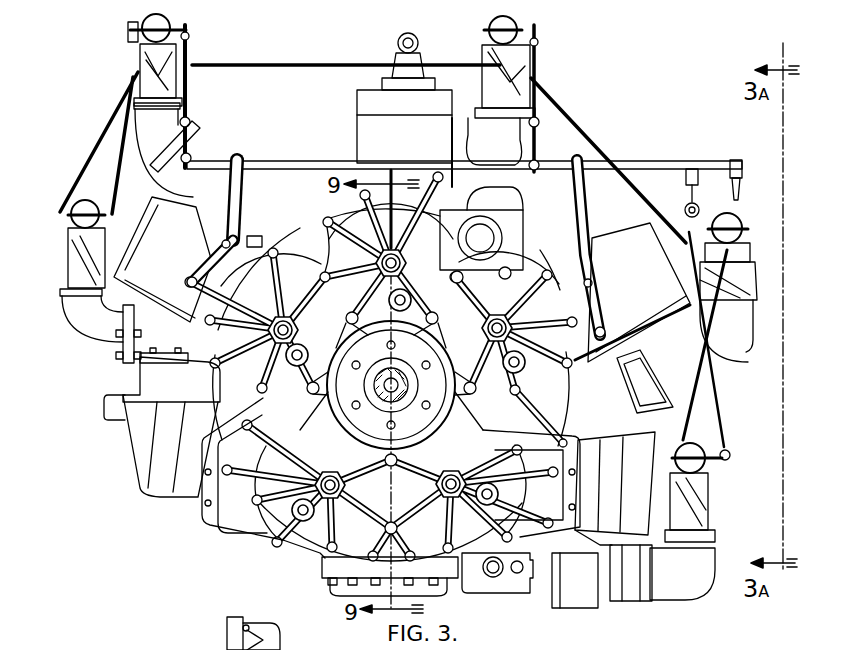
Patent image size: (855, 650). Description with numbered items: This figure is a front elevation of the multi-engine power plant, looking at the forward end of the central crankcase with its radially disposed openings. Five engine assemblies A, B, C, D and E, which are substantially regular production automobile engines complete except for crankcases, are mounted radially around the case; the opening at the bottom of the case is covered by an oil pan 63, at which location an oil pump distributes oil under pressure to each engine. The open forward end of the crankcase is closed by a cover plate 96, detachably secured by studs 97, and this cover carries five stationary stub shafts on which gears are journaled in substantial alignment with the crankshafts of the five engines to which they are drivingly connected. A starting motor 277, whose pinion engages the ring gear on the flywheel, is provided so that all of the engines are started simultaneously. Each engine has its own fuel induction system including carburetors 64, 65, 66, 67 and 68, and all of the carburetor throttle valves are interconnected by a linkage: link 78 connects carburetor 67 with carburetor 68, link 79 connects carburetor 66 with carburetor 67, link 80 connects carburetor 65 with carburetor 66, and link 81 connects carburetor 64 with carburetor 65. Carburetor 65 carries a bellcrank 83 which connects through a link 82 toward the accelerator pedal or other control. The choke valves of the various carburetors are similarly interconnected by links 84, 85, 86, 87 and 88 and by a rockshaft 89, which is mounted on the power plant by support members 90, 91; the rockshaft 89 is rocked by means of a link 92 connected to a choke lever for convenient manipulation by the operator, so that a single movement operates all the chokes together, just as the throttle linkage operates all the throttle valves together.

The oil pan 63 is at (340, 593).
The carburetor 64 is at (710, 470).
The carburetor 65 is at (744, 240).
The carburetor 66 is at (488, 36).
The carburetor 67 is at (176, 26).
The carburetor 68 is at (86, 200).
The link 78 is at (103, 136).
The link 79 is at (318, 63).
The link 80 is at (590, 140).
The link 81 is at (684, 418).
The link 82 is at (752, 334).
The bellcrank 83 is at (750, 282).
The link 84 is at (136, 63).
The link 85 is at (189, 98).
The link 86 is at (540, 72).
The link 87 is at (698, 217).
The link 88 is at (726, 424).
The rockshaft 89 is at (655, 160).
The support member 90 is at (247, 221).
The support member 91 is at (573, 215).
The link 92 is at (742, 197).
The cover plate 96 is at (296, 551).
The studs 97 is at (292, 401).
The starting motor 277 is at (478, 283).
The engine assembly A is at (612, 440).
The engine assembly B is at (627, 225).
The engine assembly C is at (357, 135).
The engine assembly D is at (147, 198).
The engine assembly E is at (176, 497).